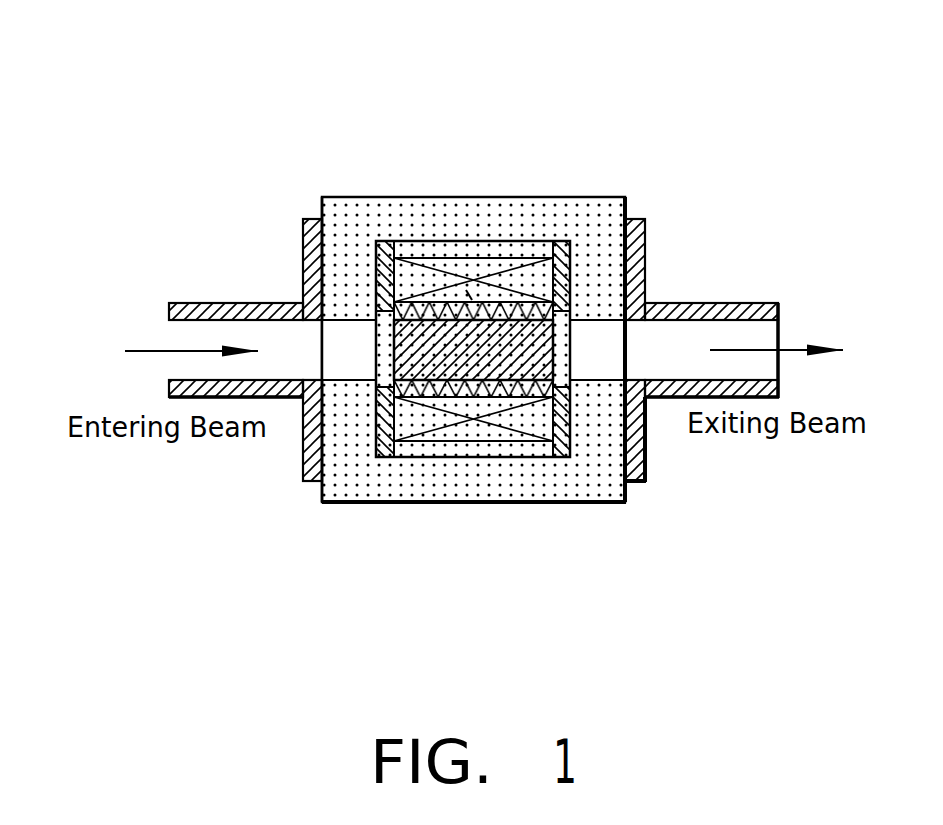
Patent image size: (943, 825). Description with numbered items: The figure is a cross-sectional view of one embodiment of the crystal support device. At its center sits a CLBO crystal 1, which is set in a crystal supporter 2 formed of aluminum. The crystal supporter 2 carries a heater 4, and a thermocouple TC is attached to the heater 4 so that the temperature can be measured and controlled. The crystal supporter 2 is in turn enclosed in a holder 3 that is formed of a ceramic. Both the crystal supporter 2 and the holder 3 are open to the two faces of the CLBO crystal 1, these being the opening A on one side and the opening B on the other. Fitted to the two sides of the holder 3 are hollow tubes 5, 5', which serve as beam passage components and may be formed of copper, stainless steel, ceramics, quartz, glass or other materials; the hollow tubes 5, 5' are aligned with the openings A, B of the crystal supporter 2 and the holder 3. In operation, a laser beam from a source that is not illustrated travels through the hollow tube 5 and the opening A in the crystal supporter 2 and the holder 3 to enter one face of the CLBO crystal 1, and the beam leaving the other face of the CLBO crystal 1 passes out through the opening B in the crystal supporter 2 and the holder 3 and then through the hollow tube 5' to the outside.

The CLBO crystal 1 is at (528, 342).
The crystal supporter 2 is at (385, 242).
The holder 3 is at (520, 478).
The heater 4 is at (412, 423).
The hollow tube 5 is at (208, 297).
The hollow tube 5' is at (716, 299).
The thermocouple TC is at (470, 302).
The opening A is at (350, 357).
The opening B is at (597, 358).